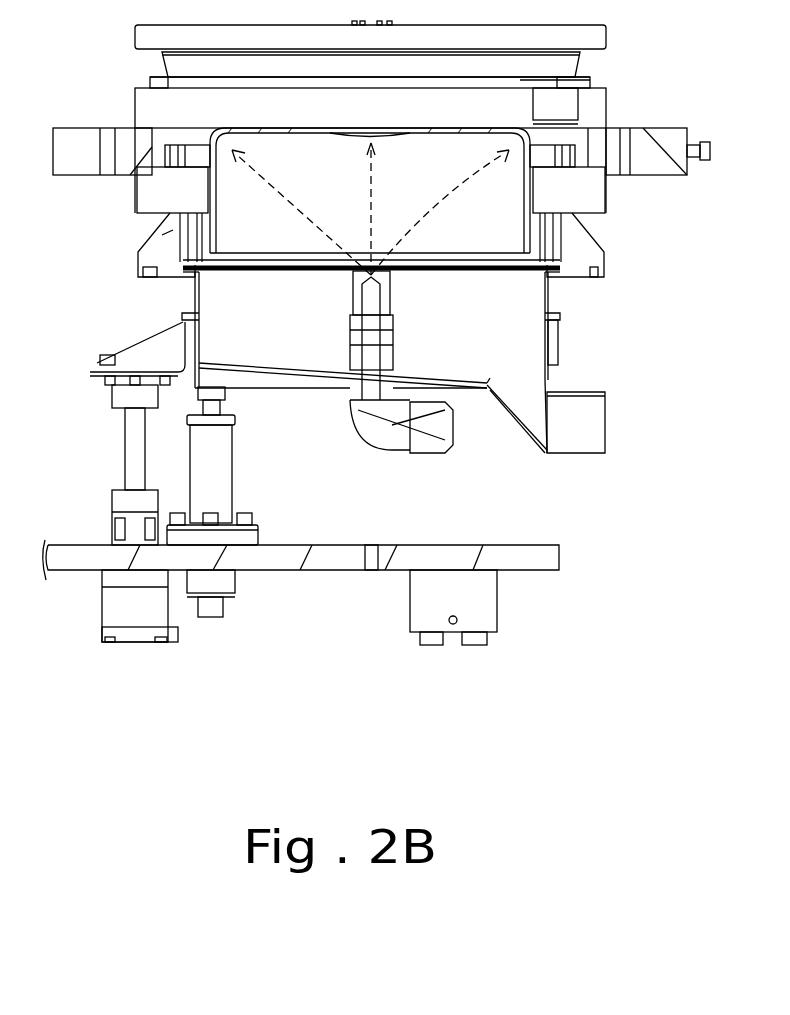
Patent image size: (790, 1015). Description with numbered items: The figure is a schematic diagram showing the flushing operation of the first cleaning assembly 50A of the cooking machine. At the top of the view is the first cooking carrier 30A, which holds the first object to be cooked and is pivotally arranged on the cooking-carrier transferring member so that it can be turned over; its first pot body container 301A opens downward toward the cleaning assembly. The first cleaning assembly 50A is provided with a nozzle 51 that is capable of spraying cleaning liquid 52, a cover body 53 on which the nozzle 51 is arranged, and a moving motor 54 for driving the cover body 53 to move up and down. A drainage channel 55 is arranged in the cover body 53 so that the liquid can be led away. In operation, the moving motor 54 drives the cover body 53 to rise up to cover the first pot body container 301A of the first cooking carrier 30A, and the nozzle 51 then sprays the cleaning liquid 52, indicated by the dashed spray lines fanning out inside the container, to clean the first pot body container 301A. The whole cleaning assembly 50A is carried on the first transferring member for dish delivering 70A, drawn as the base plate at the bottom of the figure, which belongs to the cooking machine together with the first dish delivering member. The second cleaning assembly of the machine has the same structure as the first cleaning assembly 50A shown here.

The first cooking carrier 30A is at (613, 165).
The first pot body container 301A is at (500, 243).
The first cleaning assembly 50A is at (186, 299).
The nozzle 51 is at (372, 318).
The cleaning liquid 52 is at (358, 272).
The cover body 53 is at (553, 340).
The moving motor 54 is at (133, 610).
The drainage channel 55 is at (588, 422).
The first transferring member for dish delivering 70A is at (520, 560).